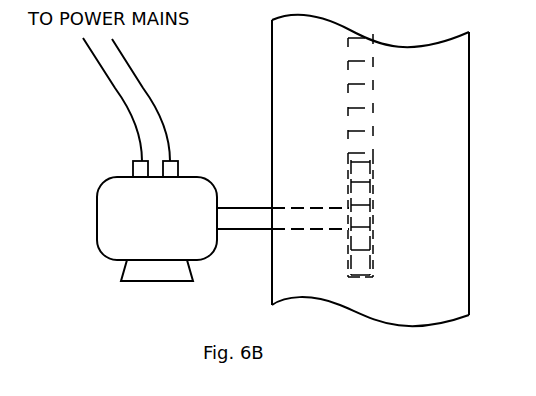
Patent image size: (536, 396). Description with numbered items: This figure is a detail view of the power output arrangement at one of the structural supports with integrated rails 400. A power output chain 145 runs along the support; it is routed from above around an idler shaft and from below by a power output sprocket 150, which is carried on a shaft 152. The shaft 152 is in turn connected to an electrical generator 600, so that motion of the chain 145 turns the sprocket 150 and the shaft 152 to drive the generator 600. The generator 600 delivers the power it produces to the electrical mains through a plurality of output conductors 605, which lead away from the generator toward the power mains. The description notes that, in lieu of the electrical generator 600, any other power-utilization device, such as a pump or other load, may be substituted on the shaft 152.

The power output chain 145 is at (374, 95).
The power output sprocket 150 is at (374, 167).
The shaft 152 is at (243, 208).
The structural support with integrated rail 400 is at (469, 278).
The electrical generator 600 is at (97, 214).
The output conductors 605 is at (138, 80).